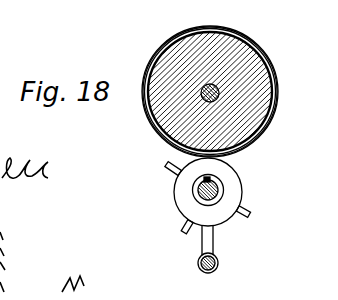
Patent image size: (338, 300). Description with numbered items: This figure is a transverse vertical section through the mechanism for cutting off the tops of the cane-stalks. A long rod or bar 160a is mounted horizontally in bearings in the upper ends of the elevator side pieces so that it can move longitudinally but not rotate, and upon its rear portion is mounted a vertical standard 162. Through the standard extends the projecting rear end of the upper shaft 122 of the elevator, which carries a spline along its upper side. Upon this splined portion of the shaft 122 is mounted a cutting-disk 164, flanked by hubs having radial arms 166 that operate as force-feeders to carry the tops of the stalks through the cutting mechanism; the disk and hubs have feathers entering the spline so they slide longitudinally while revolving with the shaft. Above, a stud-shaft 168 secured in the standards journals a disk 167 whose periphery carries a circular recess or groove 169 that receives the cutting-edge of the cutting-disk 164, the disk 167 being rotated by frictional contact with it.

The disk 167 is at (278, 42).
The circular recess or groove 169 is at (275, 80).
The stud-shaft 168 is at (218, 97).
The cutting-disk 164 is at (233, 184).
The radial arms 166 is at (166, 168).
The upper shaft of the elevator 122 is at (213, 196).
The vertical standard 162 is at (203, 246).
The rod or bar 160a is at (211, 272).